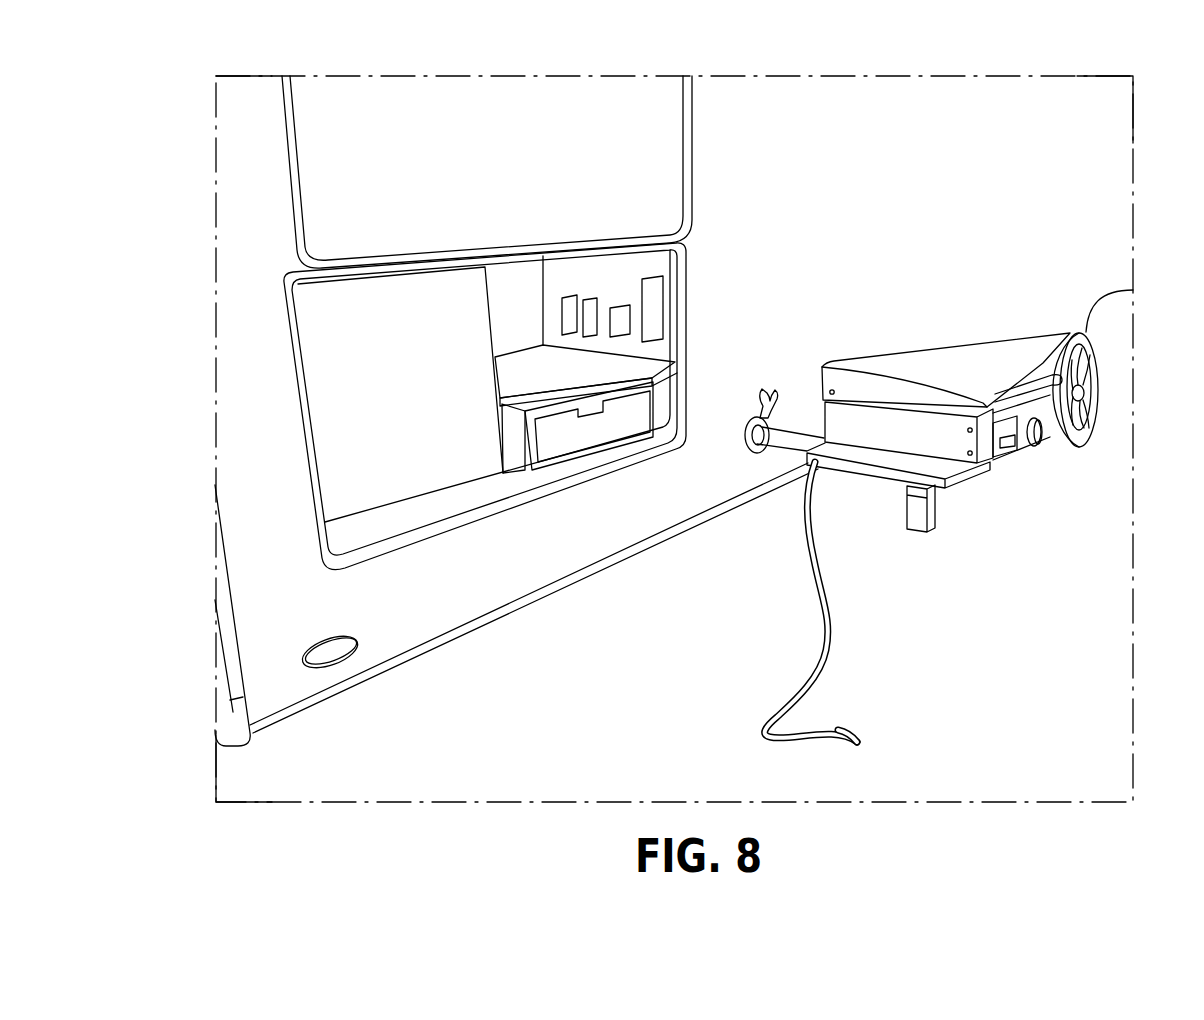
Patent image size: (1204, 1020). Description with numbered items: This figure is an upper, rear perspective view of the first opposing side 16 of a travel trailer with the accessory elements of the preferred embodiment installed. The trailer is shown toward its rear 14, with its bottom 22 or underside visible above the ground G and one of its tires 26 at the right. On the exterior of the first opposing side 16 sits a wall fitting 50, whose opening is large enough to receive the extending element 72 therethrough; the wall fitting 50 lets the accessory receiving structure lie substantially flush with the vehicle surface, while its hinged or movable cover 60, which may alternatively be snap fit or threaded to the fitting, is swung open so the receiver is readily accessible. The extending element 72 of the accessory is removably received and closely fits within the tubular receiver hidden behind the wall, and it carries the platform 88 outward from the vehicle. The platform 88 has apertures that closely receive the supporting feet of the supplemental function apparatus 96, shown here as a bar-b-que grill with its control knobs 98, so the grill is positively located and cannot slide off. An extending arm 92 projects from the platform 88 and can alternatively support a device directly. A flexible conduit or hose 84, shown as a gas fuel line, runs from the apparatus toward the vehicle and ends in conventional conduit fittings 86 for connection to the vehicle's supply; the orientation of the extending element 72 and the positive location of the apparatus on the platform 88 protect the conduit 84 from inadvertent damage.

The rear 14 is at (220, 724).
The first opposing side 16 is at (796, 125).
The bottom 22 is at (522, 608).
The tires 26 is at (1088, 412).
The wall fitting 50 is at (750, 423).
The hinged or movable cover 60 is at (767, 390).
The extending element 72 is at (790, 447).
The flexible conduit or hose 84 is at (818, 642).
The conduit fittings 86 is at (853, 742).
The platform 88 is at (877, 470).
The extending arm 92 is at (923, 518).
The supplemental function apparatus 96 is at (905, 357).
The control knobs 98 is at (1040, 437).
The ground G is at (958, 728).